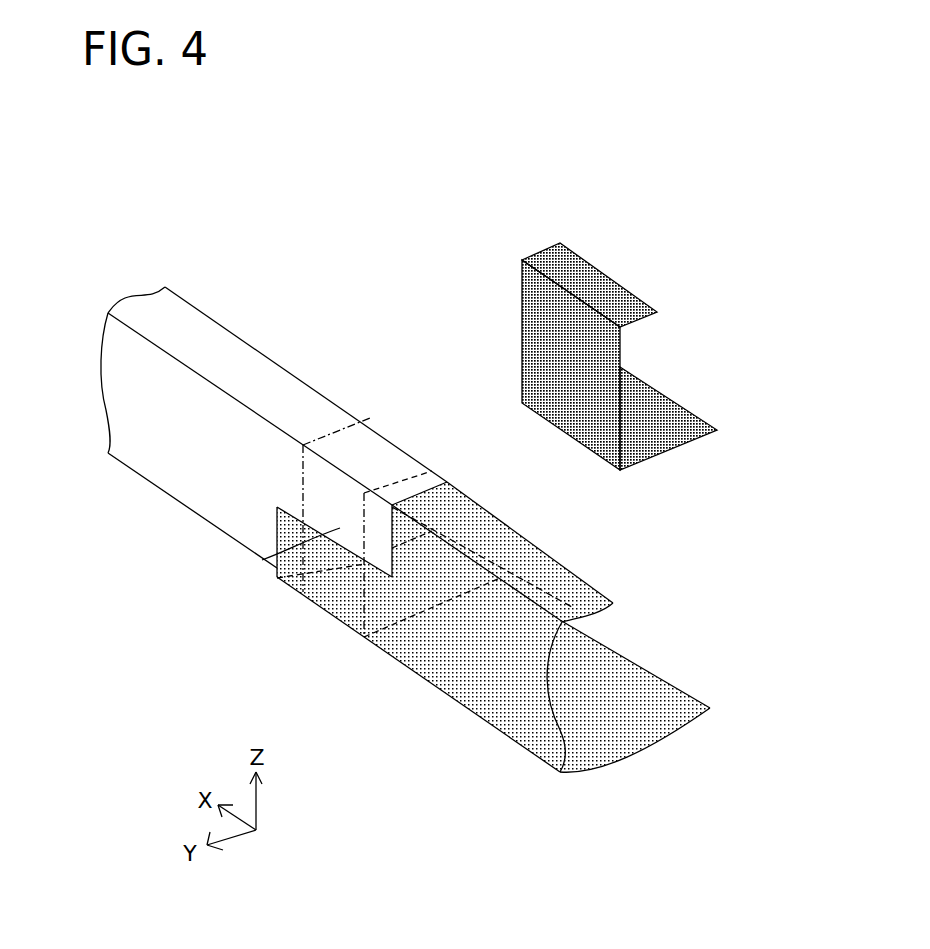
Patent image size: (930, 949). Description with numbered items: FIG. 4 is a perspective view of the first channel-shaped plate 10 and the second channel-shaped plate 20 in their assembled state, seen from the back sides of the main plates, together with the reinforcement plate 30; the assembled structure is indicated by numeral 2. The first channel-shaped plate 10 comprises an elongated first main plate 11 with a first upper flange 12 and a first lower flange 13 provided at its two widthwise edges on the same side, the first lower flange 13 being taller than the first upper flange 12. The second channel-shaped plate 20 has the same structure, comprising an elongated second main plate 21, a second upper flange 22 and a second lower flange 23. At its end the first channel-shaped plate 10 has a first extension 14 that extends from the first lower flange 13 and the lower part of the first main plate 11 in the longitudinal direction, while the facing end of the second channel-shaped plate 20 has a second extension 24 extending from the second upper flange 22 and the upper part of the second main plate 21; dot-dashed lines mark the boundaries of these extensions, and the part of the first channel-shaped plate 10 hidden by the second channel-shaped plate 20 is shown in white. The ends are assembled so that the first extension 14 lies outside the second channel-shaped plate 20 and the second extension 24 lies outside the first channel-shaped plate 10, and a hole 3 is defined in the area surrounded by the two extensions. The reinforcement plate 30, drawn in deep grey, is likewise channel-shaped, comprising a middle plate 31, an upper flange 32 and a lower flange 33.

The assembled structure 2 is at (645, 173).
The hole 3 is at (262, 560).
The first channel-shaped plate 10 is at (508, 631).
The first main plate 11 is at (512, 738).
The first upper flange 12 is at (565, 577).
The first lower flange 13 is at (677, 617).
The first extension 14 is at (379, 584).
The second channel-shaped plate 20 is at (303, 426).
The second main plate 21 is at (158, 482).
The second upper flange 22 is at (283, 373).
The second lower flange 23 is at (470, 501).
The second extension 24 is at (381, 499).
The reinforcement plate 30 is at (619, 335).
The middle plate 31 is at (530, 351).
The upper flange 32 is at (547, 251).
The lower flange 33 is at (677, 418).